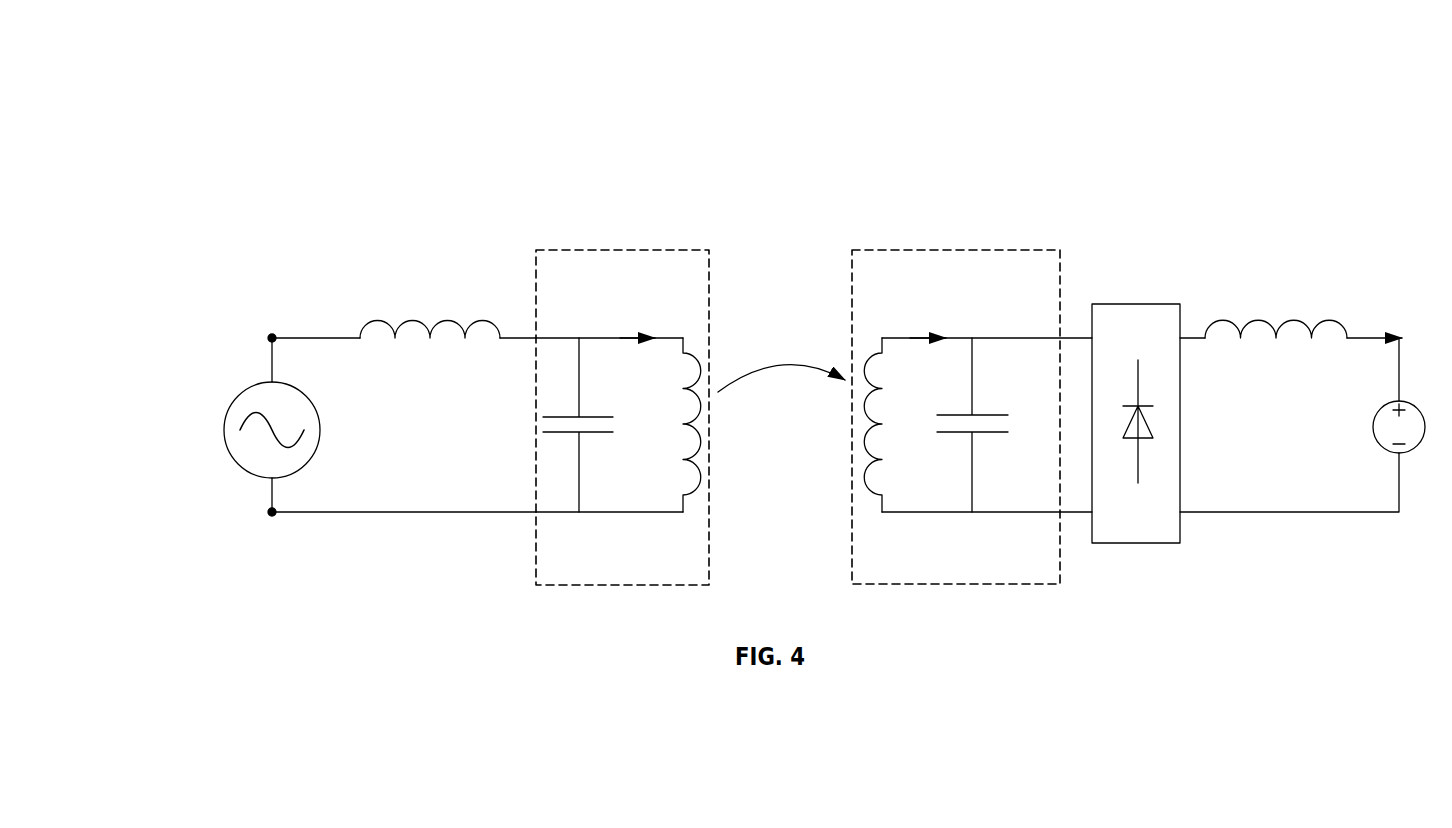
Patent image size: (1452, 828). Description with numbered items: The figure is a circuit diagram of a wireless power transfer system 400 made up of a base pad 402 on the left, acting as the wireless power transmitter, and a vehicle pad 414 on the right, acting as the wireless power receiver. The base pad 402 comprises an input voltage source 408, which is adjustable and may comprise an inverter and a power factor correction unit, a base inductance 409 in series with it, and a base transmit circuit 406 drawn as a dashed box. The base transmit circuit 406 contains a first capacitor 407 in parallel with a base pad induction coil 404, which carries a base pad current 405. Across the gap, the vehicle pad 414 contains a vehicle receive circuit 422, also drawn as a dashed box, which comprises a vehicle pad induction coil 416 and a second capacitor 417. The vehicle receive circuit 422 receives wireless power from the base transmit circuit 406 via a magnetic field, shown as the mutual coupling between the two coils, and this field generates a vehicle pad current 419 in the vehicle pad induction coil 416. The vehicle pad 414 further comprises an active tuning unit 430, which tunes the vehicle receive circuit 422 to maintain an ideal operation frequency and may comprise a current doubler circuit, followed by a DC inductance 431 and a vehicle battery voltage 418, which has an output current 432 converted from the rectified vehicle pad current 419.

The wireless power transfer system 400 is at (287, 105).
The base pad 402 is at (287, 245).
The base pad induction coil 404 is at (698, 487).
The base pad current 405 is at (650, 293).
The base transmit circuit 406 is at (610, 248).
The capacitor 407 is at (555, 412).
The input voltage source 408 is at (252, 385).
The base inductance 409 is at (387, 315).
The vehicle pad 414 is at (1248, 238).
The vehicle pad induction coil 416 is at (855, 465).
The capacitor 417 is at (985, 407).
The vehicle battery voltage 418 is at (1373, 445).
The vehicle pad current 419 is at (927, 303).
The vehicle receive circuit 422 is at (892, 248).
The active tuning unit 430 is at (1112, 304).
The DC inductance 431 is at (1273, 290).
The output current 432 is at (1377, 350).